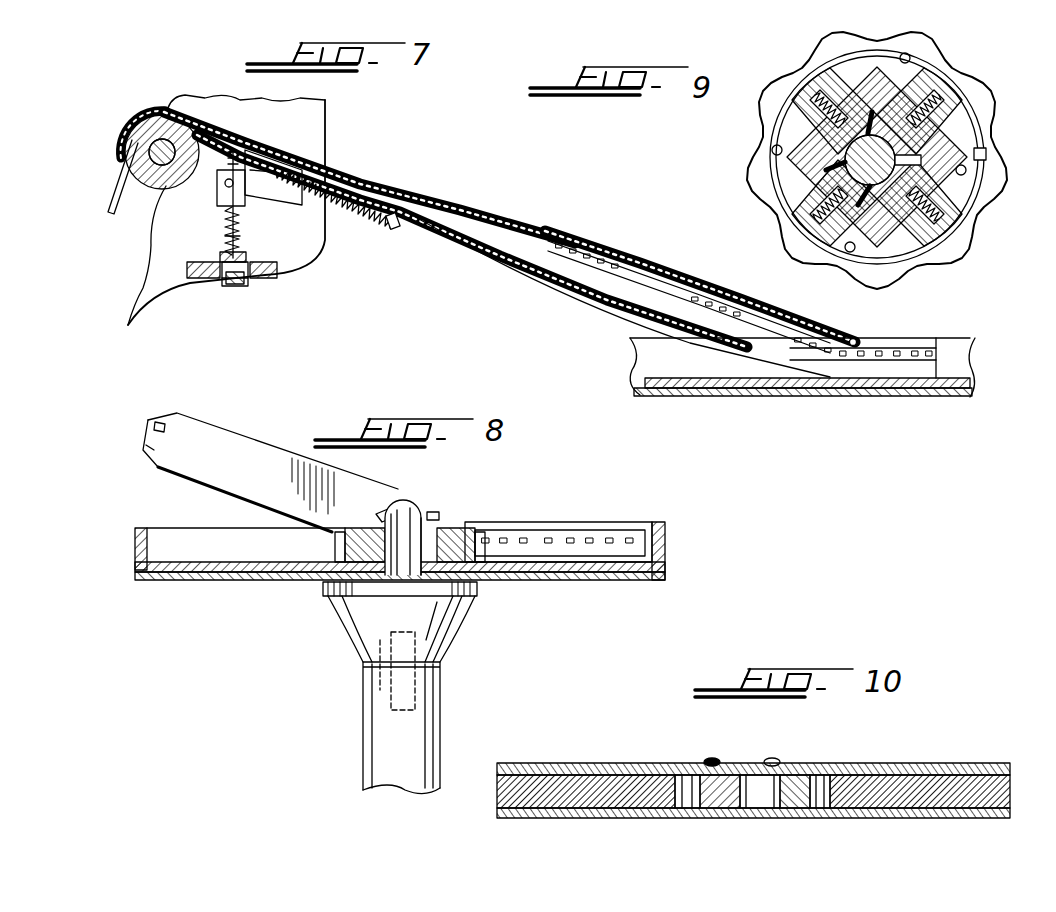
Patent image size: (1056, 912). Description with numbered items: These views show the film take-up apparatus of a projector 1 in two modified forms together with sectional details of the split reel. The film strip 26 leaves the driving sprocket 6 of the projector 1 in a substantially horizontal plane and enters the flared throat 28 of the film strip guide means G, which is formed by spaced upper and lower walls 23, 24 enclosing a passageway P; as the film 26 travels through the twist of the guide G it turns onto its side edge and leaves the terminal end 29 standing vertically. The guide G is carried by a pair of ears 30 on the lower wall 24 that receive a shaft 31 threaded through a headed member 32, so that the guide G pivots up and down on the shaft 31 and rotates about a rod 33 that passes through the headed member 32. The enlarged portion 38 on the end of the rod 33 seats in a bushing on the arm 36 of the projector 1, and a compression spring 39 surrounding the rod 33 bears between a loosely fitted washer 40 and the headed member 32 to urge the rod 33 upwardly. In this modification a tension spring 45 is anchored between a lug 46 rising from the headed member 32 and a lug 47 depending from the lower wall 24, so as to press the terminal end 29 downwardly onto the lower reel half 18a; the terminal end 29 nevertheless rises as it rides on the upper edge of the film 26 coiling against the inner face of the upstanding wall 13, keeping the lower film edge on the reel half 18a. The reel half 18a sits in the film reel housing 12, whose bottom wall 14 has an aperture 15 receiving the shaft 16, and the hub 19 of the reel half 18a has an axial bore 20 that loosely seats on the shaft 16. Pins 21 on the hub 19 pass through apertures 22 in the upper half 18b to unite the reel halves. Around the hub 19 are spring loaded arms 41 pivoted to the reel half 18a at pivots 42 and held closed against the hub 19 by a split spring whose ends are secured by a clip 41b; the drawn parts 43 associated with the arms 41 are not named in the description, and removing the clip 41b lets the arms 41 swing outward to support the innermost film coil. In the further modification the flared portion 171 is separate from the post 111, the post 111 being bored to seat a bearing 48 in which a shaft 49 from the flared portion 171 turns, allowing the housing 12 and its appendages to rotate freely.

In FIG. 7, the projector 1 is at (140, 293).
In FIG. 7, the driving sprocket 6 is at (127, 140).
In FIG. 8, the film reel housing 12 is at (680, 548).
In FIG. 7, the upstanding wall 13 is at (955, 350).
In FIG. 8, the upstanding wall 13 is at (150, 532).
In FIG. 7, the bottom wall 14 is at (838, 386).
In FIG. 8, the bottom wall 14 is at (606, 582).
In FIG. 8, the aperture 15 is at (410, 582).
In FIG. 9, the shaft 16 is at (962, 118).
In FIG. 8, the shaft 16 is at (428, 520).
In FIG. 7, the lower half of the take-up reel 18a is at (968, 372).
In FIG. 9, the lower half of the take-up reel 18a is at (936, 254).
In FIG. 8, the lower half of the take-up reel 18a is at (588, 566).
In FIG. 10, the lower half of the take-up reel 18a is at (594, 818).
In FIG. 10, the upper half of the reel 18b is at (582, 764).
In FIG. 9, the hub 19 is at (776, 126).
In FIG. 8, the axial bore 20 is at (400, 524).
In FIG. 10, the axial bore 20 is at (762, 808).
In FIG. 8, the pins 21 is at (382, 512).
In FIG. 10, the pins 21 is at (770, 758).
In FIG. 10, the apertures 22 is at (715, 808).
In FIG. 7, the upper wall 23 is at (388, 196).
In FIG. 7, the lower wall 24 is at (425, 224).
In FIG. 7, the film strip 26 is at (908, 366).
In FIG. 8, the film strip 26 is at (638, 540).
In FIG. 10, the film strip 26 is at (936, 778).
In FIG. 7, the flared throat 28 is at (207, 108).
In FIG. 7, the terminal end 29 is at (858, 340).
In FIG. 8, the terminal end 29 is at (492, 536).
In FIG. 7, the ears 30 is at (305, 192).
In FIG. 7, the shaft 31 is at (224, 188).
In FIG. 7, the headed member 32 is at (226, 210).
In FIG. 7, the rod 33 is at (240, 235).
In FIG. 7, the arm 36 is at (246, 282).
In FIG. 7, the enlarged portion 38 is at (226, 284).
In FIG. 7, the compression spring 39 is at (222, 252).
In FIG. 7, the washer 40 is at (280, 266).
In FIG. 9, the spring loaded arms 41 is at (818, 68).
In FIG. 8, the spring loaded arms 41 is at (348, 530).
In FIG. 10, the spring loaded arms 41 is at (690, 782).
In FIG. 9, the clip 41b is at (988, 152).
In FIG. 8, the clip 41b is at (484, 540).
In FIG. 9, the pivots 42 is at (906, 54).
In FIG. 9, the spring 43 is at (798, 98).
In FIG. 7, the tension spring 45 is at (352, 206).
In FIG. 7, the lug 46 is at (236, 165).
In FIG. 7, the lug 47 is at (396, 228).
In FIG. 8, the bearing 48 is at (378, 700).
In FIG. 8, the shaft 49 is at (376, 656).
In FIG. 8, the post 111 is at (430, 722).
In FIG. 8, the flared portion 171 is at (440, 615).
In FIG. 7, the film strip guide means G is at (566, 226).
In FIG. 8, the film strip guide means G is at (266, 434).
In FIG. 7, the passageway P is at (612, 268).